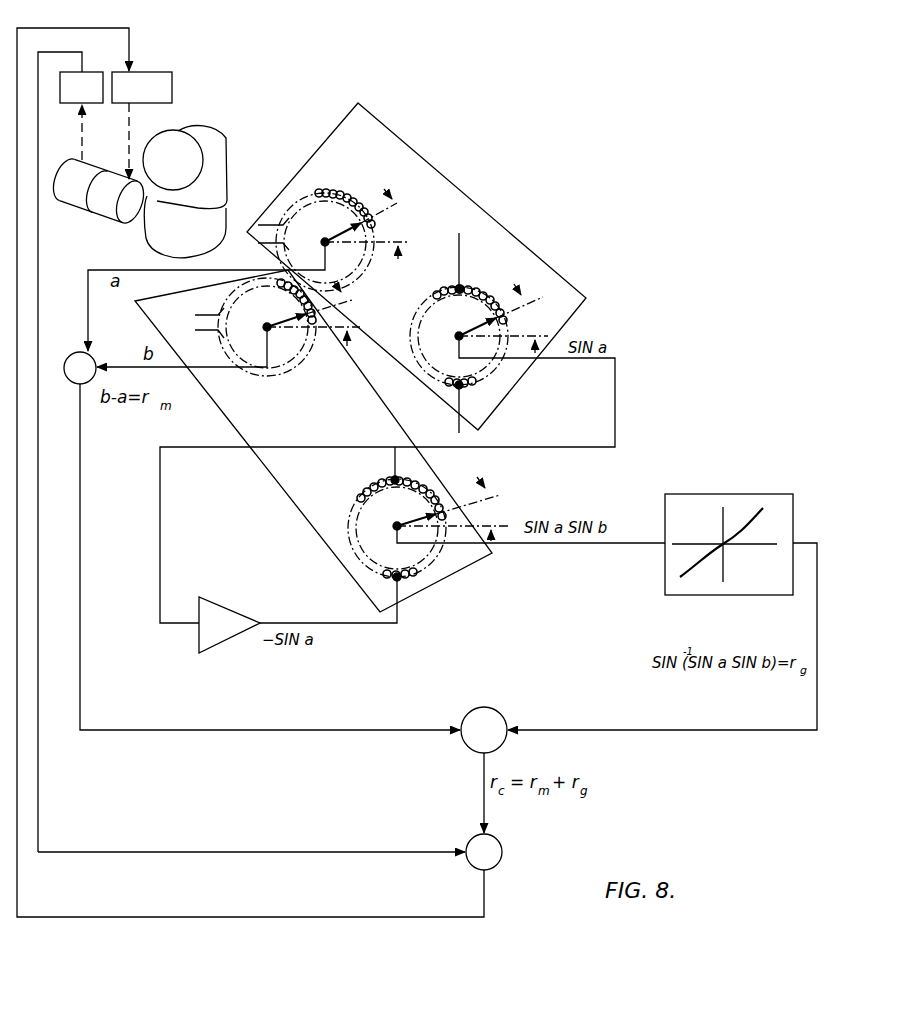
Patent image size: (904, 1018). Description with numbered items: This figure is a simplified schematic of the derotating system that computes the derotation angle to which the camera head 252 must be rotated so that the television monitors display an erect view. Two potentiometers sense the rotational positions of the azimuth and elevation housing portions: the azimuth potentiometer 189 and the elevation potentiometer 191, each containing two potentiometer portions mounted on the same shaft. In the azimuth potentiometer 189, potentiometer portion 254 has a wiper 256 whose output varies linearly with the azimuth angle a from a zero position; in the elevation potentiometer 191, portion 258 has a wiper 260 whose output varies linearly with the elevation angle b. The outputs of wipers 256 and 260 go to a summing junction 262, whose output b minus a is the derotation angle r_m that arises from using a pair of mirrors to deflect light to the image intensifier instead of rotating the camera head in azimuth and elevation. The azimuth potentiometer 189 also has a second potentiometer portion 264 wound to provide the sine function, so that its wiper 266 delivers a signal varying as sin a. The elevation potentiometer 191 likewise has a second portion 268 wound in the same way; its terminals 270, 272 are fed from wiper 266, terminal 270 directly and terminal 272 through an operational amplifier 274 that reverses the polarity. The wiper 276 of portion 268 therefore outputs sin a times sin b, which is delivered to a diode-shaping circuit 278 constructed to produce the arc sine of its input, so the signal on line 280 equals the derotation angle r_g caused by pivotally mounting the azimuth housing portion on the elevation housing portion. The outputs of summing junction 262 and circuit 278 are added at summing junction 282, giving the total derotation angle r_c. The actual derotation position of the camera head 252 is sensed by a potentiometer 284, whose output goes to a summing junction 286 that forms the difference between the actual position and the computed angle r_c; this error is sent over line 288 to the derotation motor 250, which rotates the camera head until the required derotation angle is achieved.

The azimuth potentiometer 189 is at (449, 172).
The elevation potentiometer 191 is at (225, 417).
The derotation motor 250 is at (167, 72).
The camera head 252 is at (90, 214).
The potentiometer portion 254 is at (337, 189).
The wiper 256 is at (348, 229).
The potentiometer portion 258 is at (272, 377).
The wiper 260 is at (290, 316).
The summing junction 262 is at (76, 351).
The second potentiometer portion 264 is at (487, 291).
The wiper 266 is at (478, 333).
The second potentiometer portion 268 is at (360, 492).
The terminal 270 is at (400, 479).
The terminal 272 is at (395, 578).
The operational amplifier 274 is at (223, 645).
The wiper 276 is at (410, 519).
The diode-shaping circuit 278 is at (662, 585).
The line 280 is at (819, 547).
The summing junction 282 is at (488, 706).
The potentiometer 284 is at (92, 72).
The summing junction 286 is at (504, 848).
The line 288 is at (405, 918).